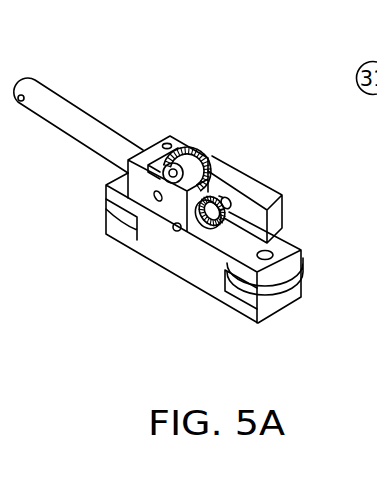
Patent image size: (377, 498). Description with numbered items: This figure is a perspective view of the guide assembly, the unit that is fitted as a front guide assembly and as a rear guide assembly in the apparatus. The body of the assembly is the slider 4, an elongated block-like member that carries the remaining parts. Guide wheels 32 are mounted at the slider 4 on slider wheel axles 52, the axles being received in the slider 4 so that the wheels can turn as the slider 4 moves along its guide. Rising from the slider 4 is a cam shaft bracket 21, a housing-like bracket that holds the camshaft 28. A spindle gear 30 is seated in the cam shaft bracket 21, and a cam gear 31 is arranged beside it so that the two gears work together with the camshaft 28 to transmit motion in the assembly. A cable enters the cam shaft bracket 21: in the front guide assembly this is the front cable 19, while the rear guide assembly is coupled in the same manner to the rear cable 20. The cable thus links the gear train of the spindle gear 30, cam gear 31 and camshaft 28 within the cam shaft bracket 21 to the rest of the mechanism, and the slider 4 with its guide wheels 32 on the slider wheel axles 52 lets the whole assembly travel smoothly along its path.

The front cable 19 is at (94, 116).
The rear cable 20 is at (181, 128).
The cam shaft bracket 21 is at (182, 128).
The spindle gear 30 is at (193, 142).
The camshaft 28 is at (221, 184).
The slider 4 is at (275, 188).
The slider wheel axles 52 is at (273, 265).
The guide wheels 32 is at (286, 313).
The cam gear 31 is at (226, 210).